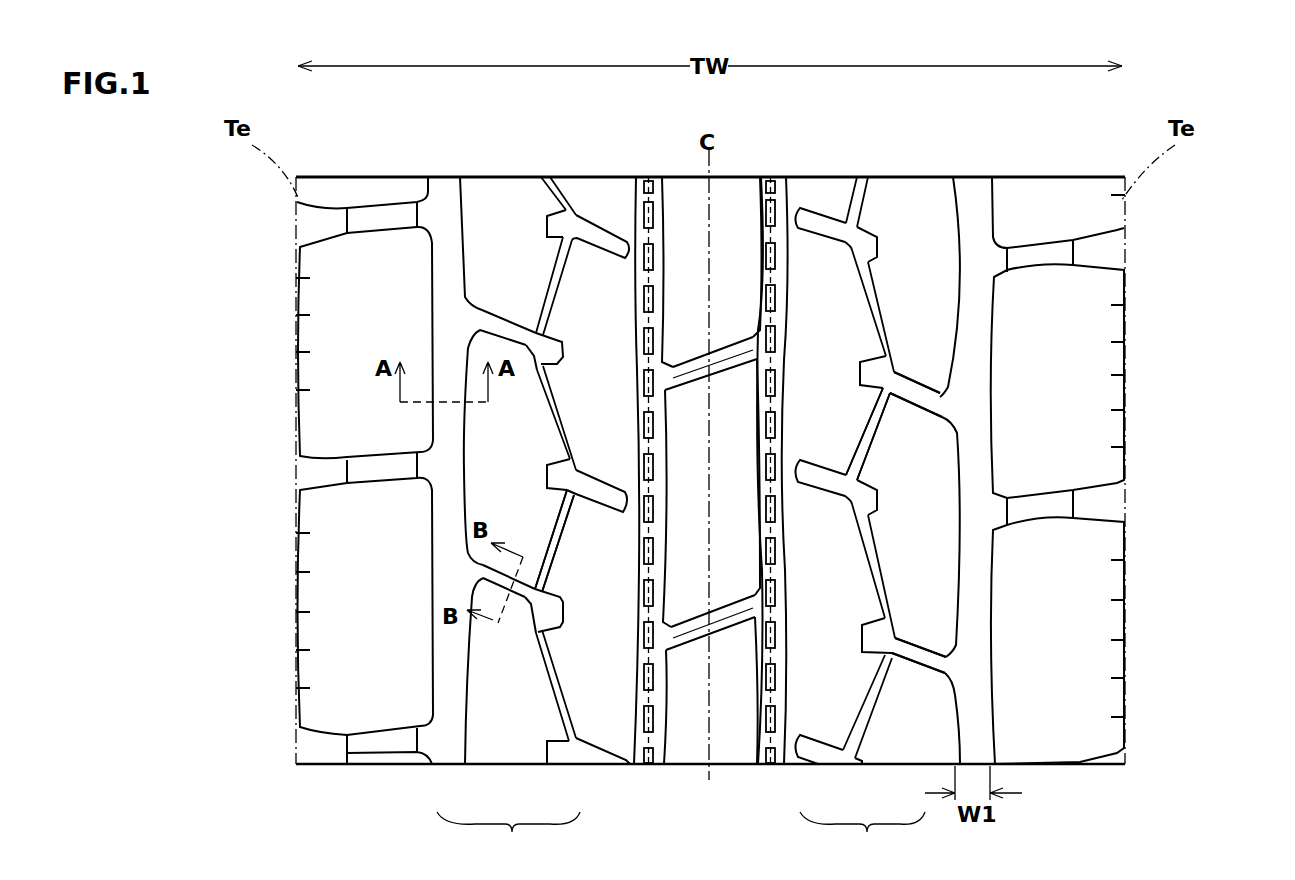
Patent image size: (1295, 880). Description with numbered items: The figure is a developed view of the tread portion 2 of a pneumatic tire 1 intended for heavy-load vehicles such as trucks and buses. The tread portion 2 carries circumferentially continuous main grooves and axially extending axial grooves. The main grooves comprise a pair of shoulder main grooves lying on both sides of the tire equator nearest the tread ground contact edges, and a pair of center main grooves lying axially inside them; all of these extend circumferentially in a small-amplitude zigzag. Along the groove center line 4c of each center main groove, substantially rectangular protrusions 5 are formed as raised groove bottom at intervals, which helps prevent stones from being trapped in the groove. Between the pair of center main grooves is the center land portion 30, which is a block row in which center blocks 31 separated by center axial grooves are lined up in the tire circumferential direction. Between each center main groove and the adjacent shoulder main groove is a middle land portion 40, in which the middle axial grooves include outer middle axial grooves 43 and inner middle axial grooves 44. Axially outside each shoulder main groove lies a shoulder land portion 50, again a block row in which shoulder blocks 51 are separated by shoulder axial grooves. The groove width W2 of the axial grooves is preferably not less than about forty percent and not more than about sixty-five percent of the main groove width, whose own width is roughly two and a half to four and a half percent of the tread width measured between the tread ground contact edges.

The pneumatic tire 1 is at (1135, 165).
The tread portion 2 is at (1004, 168).
The groove center line 4c is at (666, 678).
The protrusions 5 is at (649, 654).
The center land portion 30 is at (964, 483).
The center block 31 is at (735, 470).
The middle land portion 40 is at (732, 434).
The outer middle axial groove 43 is at (518, 603).
The inner middle axial groove 44 is at (600, 494).
The shoulder land portion 50 is at (366, 256).
The shoulder block 51 is at (357, 619).
The groove width of the axial groove W2 is at (590, 276).